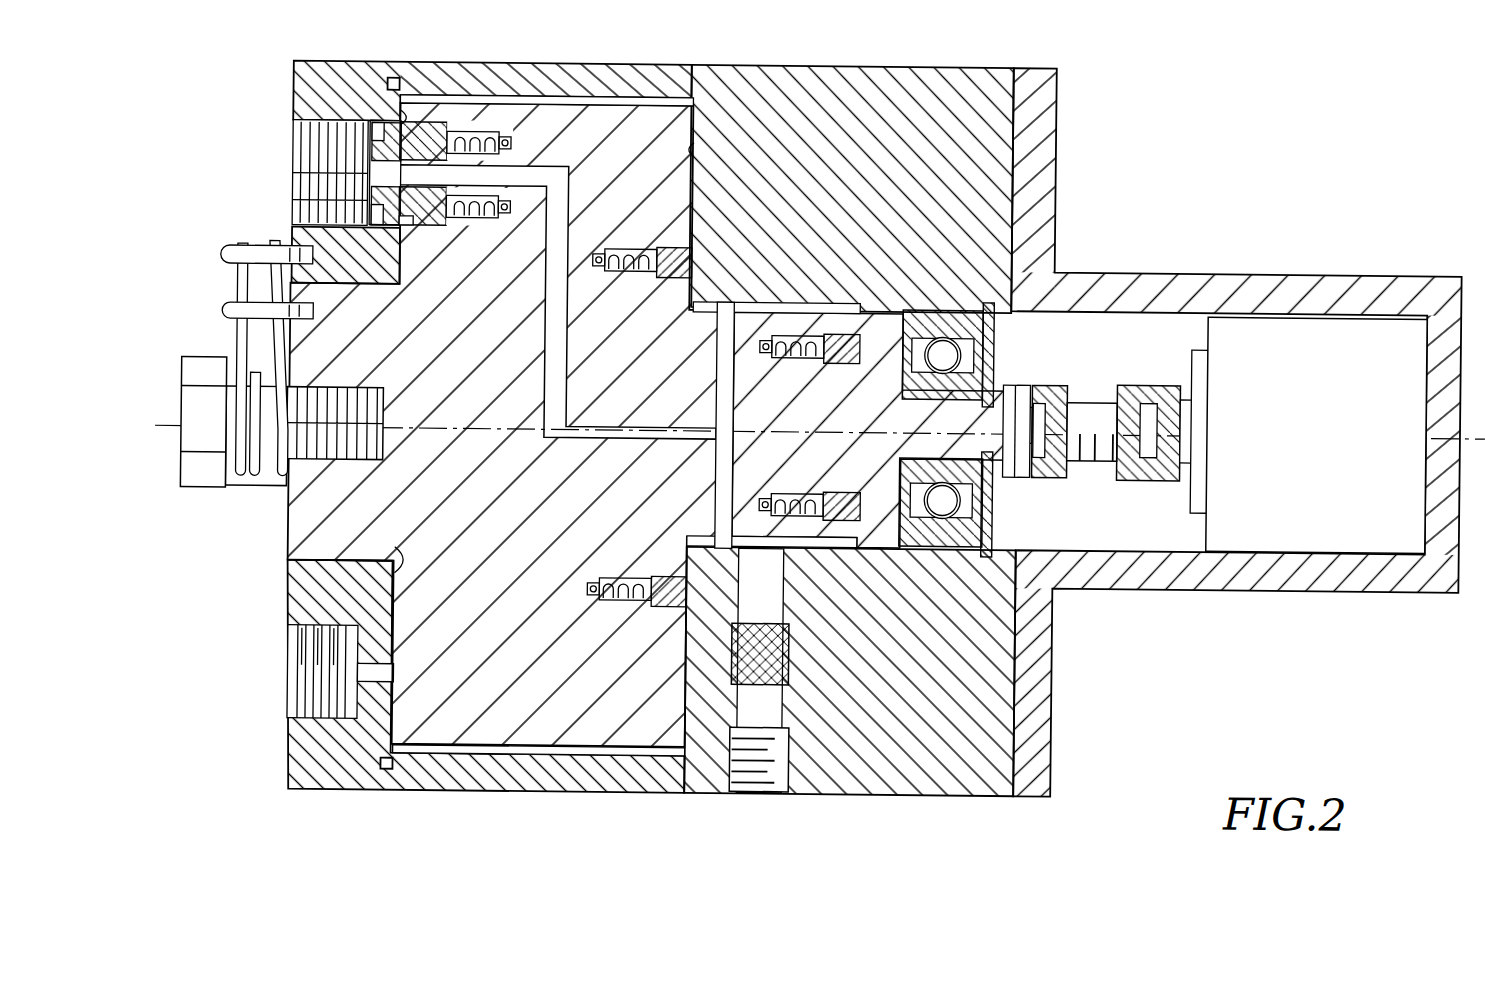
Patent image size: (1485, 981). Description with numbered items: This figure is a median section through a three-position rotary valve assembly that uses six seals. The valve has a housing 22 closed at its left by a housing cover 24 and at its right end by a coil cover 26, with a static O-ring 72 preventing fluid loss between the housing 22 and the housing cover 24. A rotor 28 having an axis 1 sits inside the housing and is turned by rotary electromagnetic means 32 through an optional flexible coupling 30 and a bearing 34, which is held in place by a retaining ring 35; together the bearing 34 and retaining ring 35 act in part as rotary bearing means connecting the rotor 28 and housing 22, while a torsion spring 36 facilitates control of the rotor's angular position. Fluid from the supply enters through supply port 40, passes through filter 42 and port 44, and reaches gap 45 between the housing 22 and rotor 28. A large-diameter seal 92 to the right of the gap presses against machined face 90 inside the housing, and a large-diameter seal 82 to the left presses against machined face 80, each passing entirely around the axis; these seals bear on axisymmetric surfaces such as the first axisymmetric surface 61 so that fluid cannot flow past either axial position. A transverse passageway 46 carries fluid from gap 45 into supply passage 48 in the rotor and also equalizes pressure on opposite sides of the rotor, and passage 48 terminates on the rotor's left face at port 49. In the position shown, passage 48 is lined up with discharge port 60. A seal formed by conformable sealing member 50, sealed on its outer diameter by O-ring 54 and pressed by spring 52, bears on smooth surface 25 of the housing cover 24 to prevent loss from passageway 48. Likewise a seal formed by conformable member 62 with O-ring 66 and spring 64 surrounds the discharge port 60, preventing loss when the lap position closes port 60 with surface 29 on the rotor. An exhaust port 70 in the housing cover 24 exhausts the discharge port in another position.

The axis 1 is at (440, 432).
The housing 22 is at (688, 66).
The housing cover 24 is at (312, 768).
The smooth surface 25 is at (405, 122).
The coil cover 26 is at (1344, 280).
The rotor 28 is at (491, 742).
The surface 29 is at (396, 594).
The flexible coupling 30 is at (1112, 368).
The rotary electromagnetic means 32 is at (1302, 406).
The bearing 34 is at (932, 545).
The retaining ring 35 is at (992, 541).
The torsion spring 36 is at (273, 484).
The supply port 40 is at (776, 792).
The filter 42 is at (787, 650).
The port 44 is at (783, 598).
The gap 45 is at (770, 303).
The transverse passageway 46 is at (719, 361).
The supply passage 48 is at (555, 308).
The port 49 is at (375, 183).
The conformable sealing member 50 is at (431, 128).
The spring 52 is at (461, 209).
The O-ring 54 is at (404, 229).
The discharge port 60 is at (315, 146).
The first axisymmetric surface 61 is at (862, 81).
The conformable member 62 is at (369, 203).
The spring 64 is at (365, 217).
The O-ring 66 is at (379, 127).
The exhaust port 70 is at (300, 641).
The static O-ring 72 is at (390, 82).
The machined face 80 is at (692, 151).
The seal 82 is at (670, 267).
The machined face 90 is at (847, 547).
The seal 92 is at (826, 358).